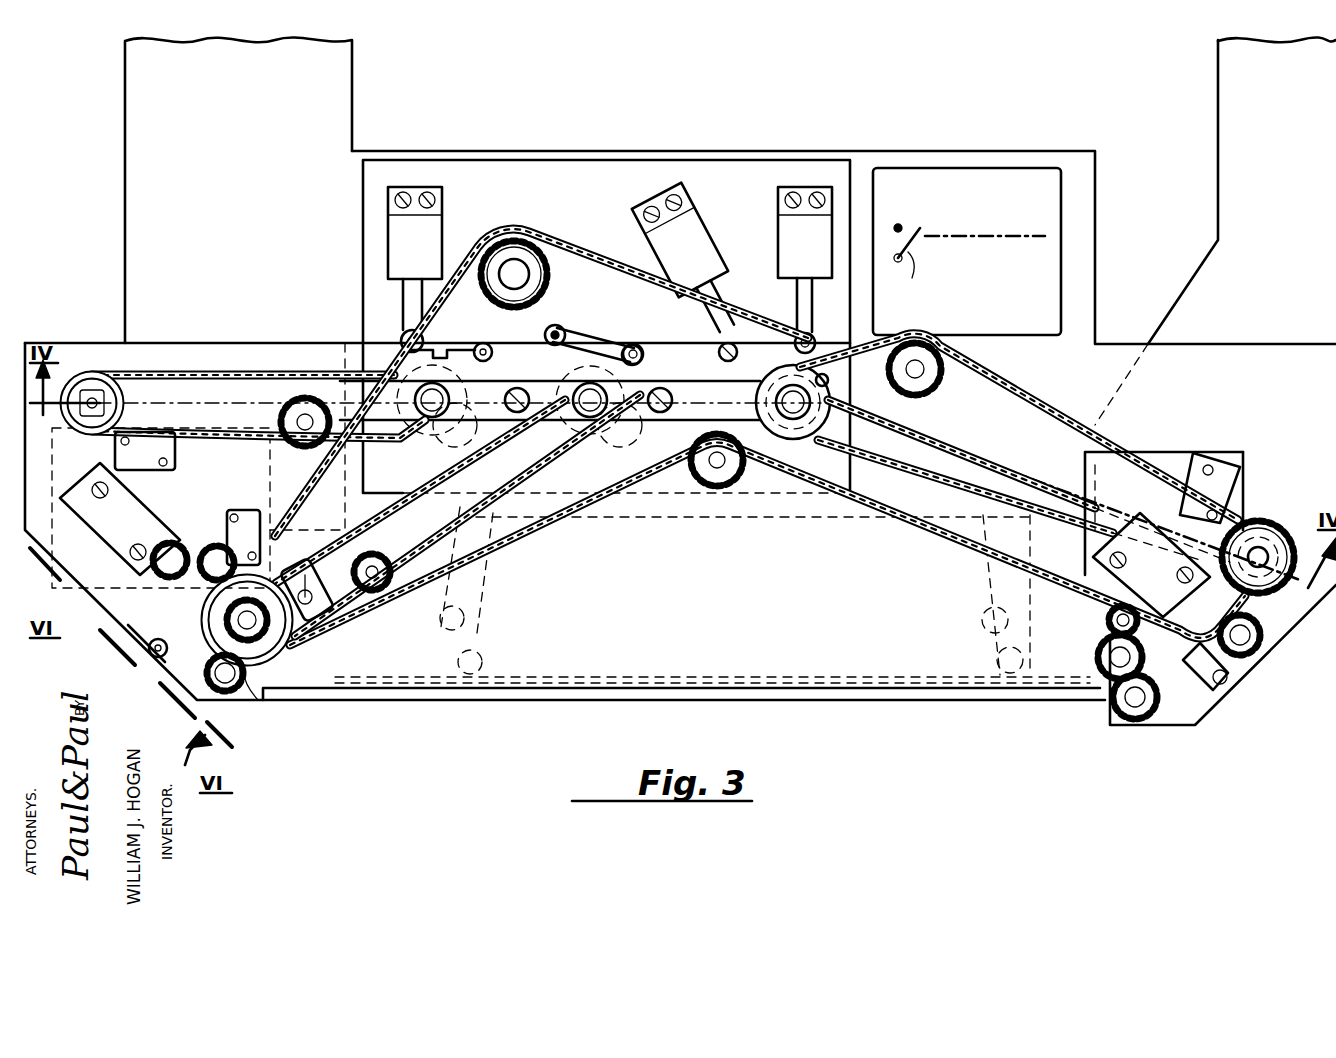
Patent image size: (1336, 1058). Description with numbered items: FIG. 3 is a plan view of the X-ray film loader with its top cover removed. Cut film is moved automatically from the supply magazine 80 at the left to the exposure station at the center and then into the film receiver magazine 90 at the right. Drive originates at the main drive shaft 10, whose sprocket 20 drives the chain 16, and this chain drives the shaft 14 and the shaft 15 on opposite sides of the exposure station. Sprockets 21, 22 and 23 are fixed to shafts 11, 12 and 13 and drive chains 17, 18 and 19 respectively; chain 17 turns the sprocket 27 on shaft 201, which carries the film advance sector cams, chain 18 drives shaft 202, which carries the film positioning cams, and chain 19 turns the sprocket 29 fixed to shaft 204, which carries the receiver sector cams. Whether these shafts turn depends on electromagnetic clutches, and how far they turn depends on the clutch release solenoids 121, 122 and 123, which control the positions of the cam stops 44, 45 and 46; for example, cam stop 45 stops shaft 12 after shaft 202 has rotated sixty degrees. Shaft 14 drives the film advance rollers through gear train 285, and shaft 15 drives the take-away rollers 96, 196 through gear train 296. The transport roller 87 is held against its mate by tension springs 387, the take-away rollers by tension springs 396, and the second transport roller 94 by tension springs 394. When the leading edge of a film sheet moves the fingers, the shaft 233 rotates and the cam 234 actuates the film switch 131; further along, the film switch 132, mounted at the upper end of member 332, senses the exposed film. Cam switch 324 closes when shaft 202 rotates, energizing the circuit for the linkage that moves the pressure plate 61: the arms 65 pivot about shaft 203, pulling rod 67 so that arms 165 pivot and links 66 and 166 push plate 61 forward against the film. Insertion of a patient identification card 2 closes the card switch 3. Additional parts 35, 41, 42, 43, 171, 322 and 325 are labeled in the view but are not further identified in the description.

The supply magazine 80 is at (125, 163).
The film receiver magazine 90 is at (1255, 183).
The patient identification card 2 is at (1010, 240).
The card switch 3 is at (907, 260).
The main drive shaft 10 is at (520, 268).
The shaft 11 is at (445, 395).
The shaft 12 is at (605, 395).
The shaft 13 is at (830, 380).
The shaft 14 is at (255, 625).
The shaft 15 is at (1170, 572).
The chain 16 is at (595, 262).
The chain 17 is at (270, 376).
The chain 18 is at (395, 500).
The chain 19 is at (1030, 398).
The sprocket 20 is at (555, 262).
The sprocket 21 is at (393, 437).
The sprocket 22 is at (467, 515).
The sprocket 23 is at (719, 352).
The sprocket 27 is at (115, 378).
The sprocket 29 is at (1275, 535).
The gear 35 is at (390, 552).
The sprocket 41 is at (462, 425).
The sprocket 42 is at (625, 428).
The pulley 43 is at (800, 437).
The cam stop 44 is at (458, 345).
The cam stop 45 is at (580, 352).
The cam stop 46 is at (790, 338).
The plate 61 is at (615, 677).
The arms 65 is at (466, 600).
The link 66 is at (480, 628).
The rod 67 is at (820, 520).
The transport roller 87 is at (228, 688).
The transport roller 94 is at (1242, 658).
The take-away roller 96 is at (1138, 705).
The clutch release solenoid 121 is at (428, 225).
The clutch release solenoid 122 is at (668, 235).
The clutch release solenoid 123 is at (790, 232).
The film switch 131 is at (150, 530).
The film switch 132 is at (1095, 545).
The arms 165 is at (985, 592).
The link 166 is at (995, 648).
The plate 171 is at (588, 700).
The take-away roller 196 is at (1100, 655).
The shaft 201 is at (85, 380).
The shaft 202 is at (305, 575).
The shaft 203 is at (480, 555).
The shaft 204 is at (1270, 578).
The shaft 233 is at (140, 660).
The cam 234 is at (140, 640).
The gear train 285 is at (200, 538).
The gear train 296 is at (1095, 637).
The block 322 is at (175, 450).
The cam switch 324 is at (246, 530).
The block 325 is at (1225, 480).
The film switch mounting member 332 is at (1228, 690).
The tension springs 387 is at (258, 700).
The tension springs 394 is at (1262, 648).
The tension springs 396 is at (1110, 690).